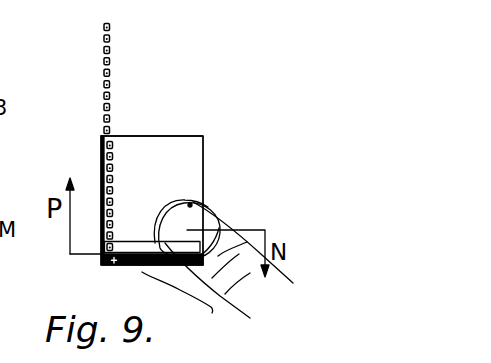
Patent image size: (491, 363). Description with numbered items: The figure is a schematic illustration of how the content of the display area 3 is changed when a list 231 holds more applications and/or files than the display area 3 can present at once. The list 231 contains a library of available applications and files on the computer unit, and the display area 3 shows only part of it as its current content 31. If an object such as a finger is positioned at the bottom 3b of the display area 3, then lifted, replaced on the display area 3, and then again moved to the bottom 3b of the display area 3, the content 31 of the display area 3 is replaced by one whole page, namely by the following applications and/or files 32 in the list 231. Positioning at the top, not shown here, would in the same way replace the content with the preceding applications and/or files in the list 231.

The content of the display area 31 is at (188, 62).
The following applications and/or files 32 is at (101, 162).
The list 231 is at (158, 160).
The display area 3 is at (202, 190).
The bottom of the display area 3b is at (217, 273).